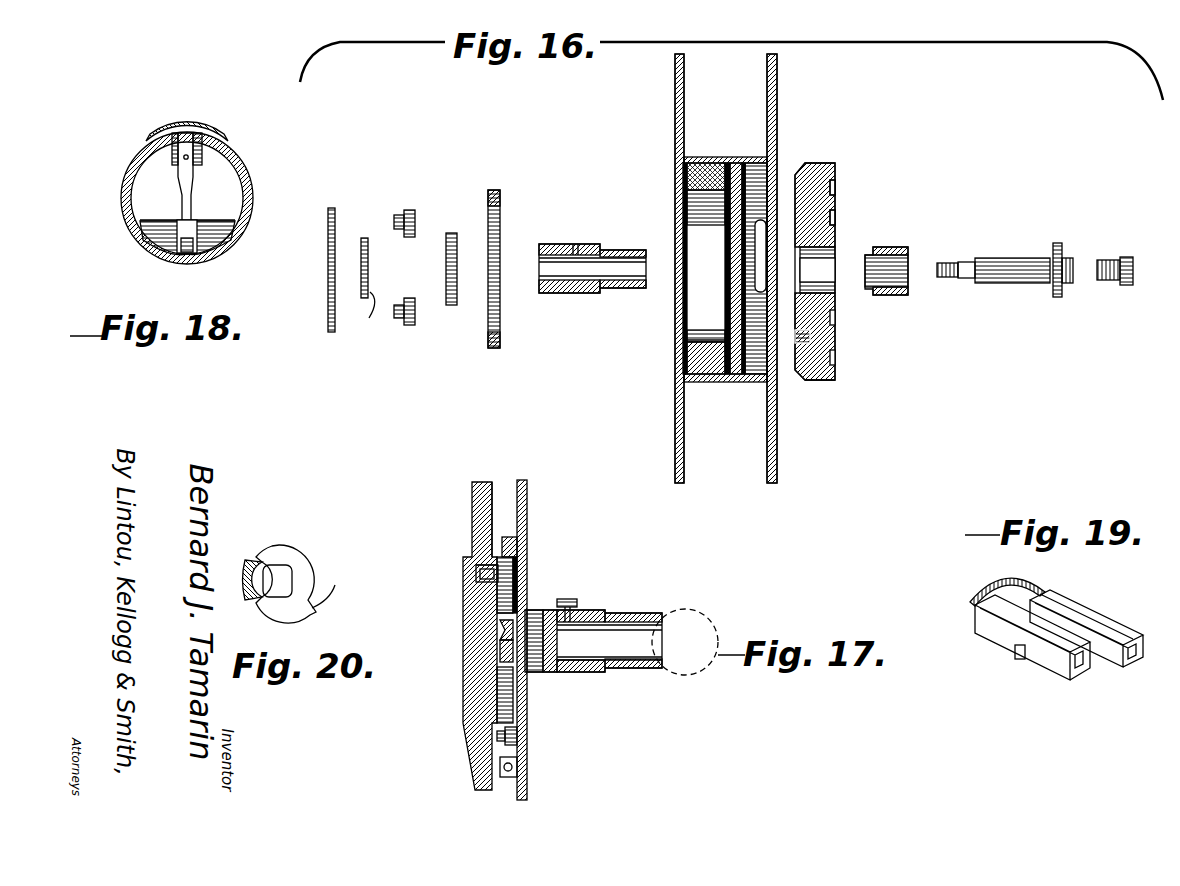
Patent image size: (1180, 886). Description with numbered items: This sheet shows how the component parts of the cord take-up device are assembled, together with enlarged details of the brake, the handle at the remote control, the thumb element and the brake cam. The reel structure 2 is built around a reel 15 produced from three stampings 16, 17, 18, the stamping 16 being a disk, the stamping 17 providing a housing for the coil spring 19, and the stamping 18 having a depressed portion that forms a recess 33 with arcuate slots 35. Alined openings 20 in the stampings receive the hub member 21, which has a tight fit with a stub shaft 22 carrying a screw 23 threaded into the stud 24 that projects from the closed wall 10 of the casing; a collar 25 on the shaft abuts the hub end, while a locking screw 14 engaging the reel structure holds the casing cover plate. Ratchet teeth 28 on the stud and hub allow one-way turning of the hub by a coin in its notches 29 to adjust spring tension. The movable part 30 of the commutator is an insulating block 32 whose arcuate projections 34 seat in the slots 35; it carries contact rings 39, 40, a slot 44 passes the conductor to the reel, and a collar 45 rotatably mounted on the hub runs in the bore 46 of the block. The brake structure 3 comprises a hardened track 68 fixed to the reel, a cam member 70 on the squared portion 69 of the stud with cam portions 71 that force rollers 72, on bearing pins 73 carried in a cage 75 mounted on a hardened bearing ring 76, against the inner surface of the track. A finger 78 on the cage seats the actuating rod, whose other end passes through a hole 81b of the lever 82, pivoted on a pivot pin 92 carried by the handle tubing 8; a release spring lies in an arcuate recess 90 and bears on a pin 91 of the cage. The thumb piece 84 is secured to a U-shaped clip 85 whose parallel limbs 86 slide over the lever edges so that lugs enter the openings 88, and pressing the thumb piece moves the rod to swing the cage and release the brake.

In FIG. 17, the reel structure 2 is at (528, 508).
In FIG. 17, the brake structure 3 is at (528, 563).
In FIG. 18, the tubular casing 8 is at (248, 176).
In FIG. 17, the closed wall 10 is at (481, 520).
In FIG. 16, the locking screw 14 is at (1129, 258).
In FIG. 16, the reel 15 is at (726, 268).
In FIG. 16, the stamping 16 is at (675, 117).
In FIG. 16, the stamping 17 is at (706, 157).
In FIG. 16, the stamping 18 is at (767, 155).
In FIG. 16, the coil spring 19 is at (756, 385).
In FIG. 16, the alined openings 20 is at (733, 266).
In FIG. 17, the alined openings 20 is at (566, 598).
In FIG. 16, the hub member 21 is at (581, 244).
In FIG. 17, the hub member 21 is at (598, 612).
In FIG. 16, the stub shaft 22 is at (1008, 258).
In FIG. 16, the screw 23 is at (945, 263).
In FIG. 17, the stud 24 is at (560, 655).
In FIG. 16, the collar 25 is at (1058, 243).
In FIG. 17, the ratchet teeth 28 is at (500, 630).
In FIG. 17, the notches 29 is at (670, 618).
In FIG. 16, the movable part 30 is at (838, 172).
In FIG. 16, the insulating block 32 is at (834, 378).
In FIG. 16, the recess 33 is at (770, 178).
In FIG. 16, the arcuate projections 34 is at (796, 292).
In FIG. 16, the arcuate slots 35 is at (768, 330).
In FIG. 16, the contact ring 39 is at (837, 188).
In FIG. 16, the contact ring 40 is at (837, 217).
In FIG. 16, the slot 44 is at (742, 290).
In FIG. 16, the collar 45 is at (893, 297).
In FIG. 16, the bore 46 is at (822, 272).
In FIG. 16, the track 68 is at (497, 196).
In FIG. 17, the track 68 is at (510, 537).
In FIG. 17, the squared portion 69 is at (500, 652).
In FIG. 16, the cam member 70 is at (452, 236).
In FIG. 17, the cam member 70 is at (505, 598).
In FIG. 20, the cam member 70 is at (286, 548).
In FIG. 20, the cam portions 71 is at (316, 578).
In FIG. 16, the rollers 72 is at (415, 218).
In FIG. 17, the rollers 72 is at (500, 714).
In FIG. 16, the bearing pins 73 is at (398, 213).
In FIG. 17, the bearing pins 73 is at (500, 700).
In FIG. 16, the cage 75 is at (333, 210).
In FIG. 17, the cage 75 is at (493, 556).
In FIG. 16, the bearing ring 76 is at (368, 300).
In FIG. 17, the bearing ring 76 is at (505, 611).
In FIG. 17, the finger 78 is at (520, 763).
In FIG. 18, the hole 81b is at (178, 170).
In FIG. 18, the lever 82 is at (193, 200).
In FIG. 18, the thumb piece 84 is at (191, 122).
In FIG. 18, the clip 85 is at (166, 143).
In FIG. 19, the clip 85 is at (1037, 592).
In FIG. 18, the limbs 86 is at (205, 150).
In FIG. 19, the limbs 86 is at (1000, 628).
In FIG. 19, the openings 88 is at (1020, 660).
In FIG. 17, the arcuate recess 90 is at (478, 575).
In FIG. 17, the pin 91 is at (478, 566).
In FIG. 18, the pivot pin 92 is at (208, 245).